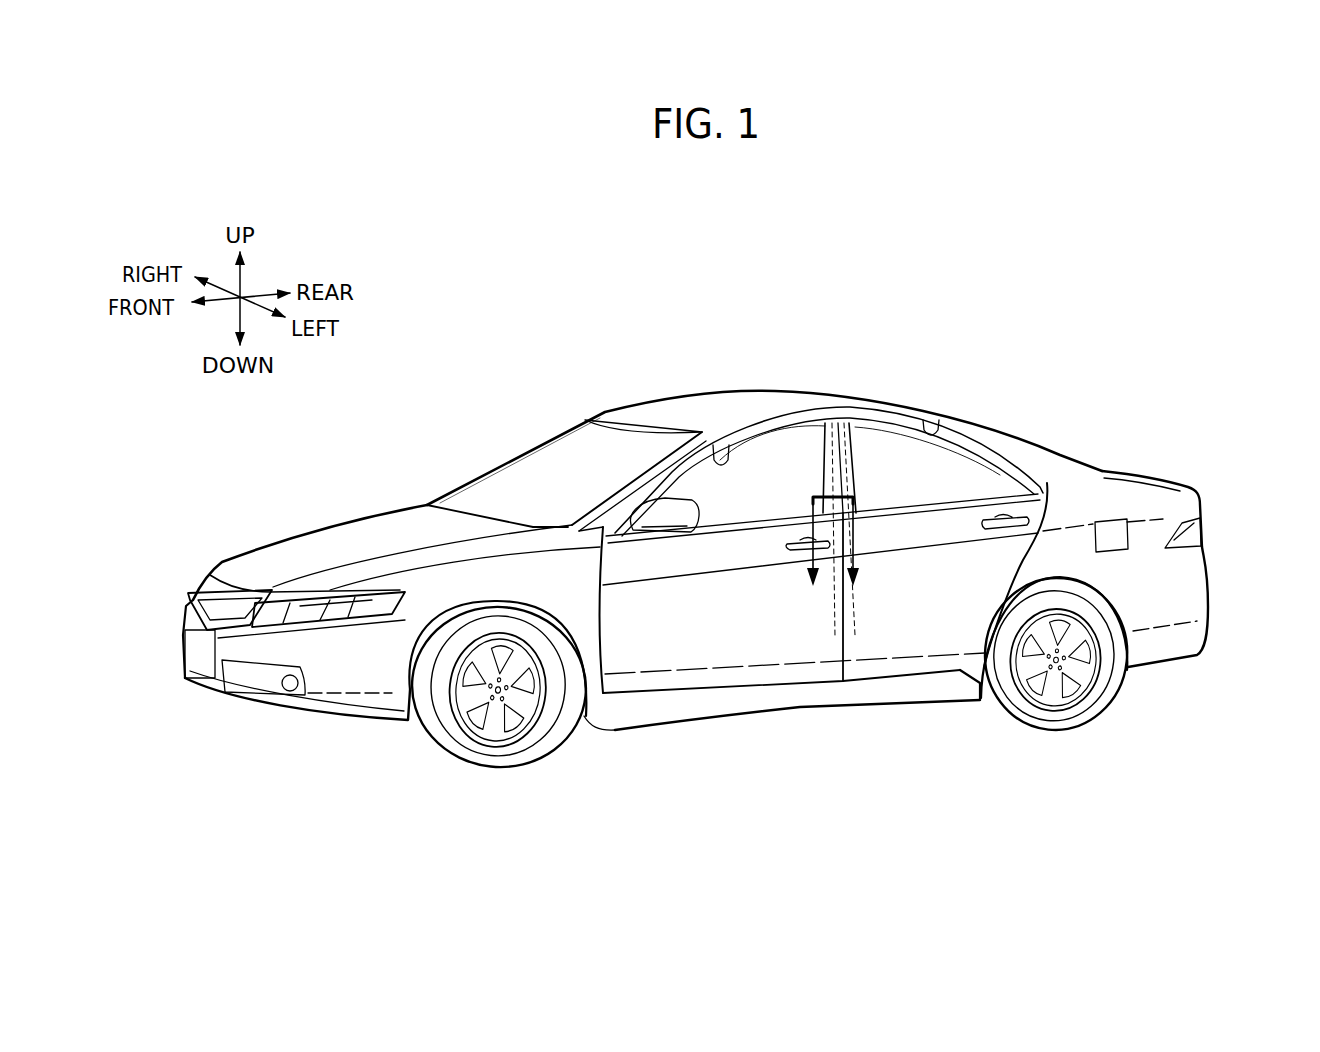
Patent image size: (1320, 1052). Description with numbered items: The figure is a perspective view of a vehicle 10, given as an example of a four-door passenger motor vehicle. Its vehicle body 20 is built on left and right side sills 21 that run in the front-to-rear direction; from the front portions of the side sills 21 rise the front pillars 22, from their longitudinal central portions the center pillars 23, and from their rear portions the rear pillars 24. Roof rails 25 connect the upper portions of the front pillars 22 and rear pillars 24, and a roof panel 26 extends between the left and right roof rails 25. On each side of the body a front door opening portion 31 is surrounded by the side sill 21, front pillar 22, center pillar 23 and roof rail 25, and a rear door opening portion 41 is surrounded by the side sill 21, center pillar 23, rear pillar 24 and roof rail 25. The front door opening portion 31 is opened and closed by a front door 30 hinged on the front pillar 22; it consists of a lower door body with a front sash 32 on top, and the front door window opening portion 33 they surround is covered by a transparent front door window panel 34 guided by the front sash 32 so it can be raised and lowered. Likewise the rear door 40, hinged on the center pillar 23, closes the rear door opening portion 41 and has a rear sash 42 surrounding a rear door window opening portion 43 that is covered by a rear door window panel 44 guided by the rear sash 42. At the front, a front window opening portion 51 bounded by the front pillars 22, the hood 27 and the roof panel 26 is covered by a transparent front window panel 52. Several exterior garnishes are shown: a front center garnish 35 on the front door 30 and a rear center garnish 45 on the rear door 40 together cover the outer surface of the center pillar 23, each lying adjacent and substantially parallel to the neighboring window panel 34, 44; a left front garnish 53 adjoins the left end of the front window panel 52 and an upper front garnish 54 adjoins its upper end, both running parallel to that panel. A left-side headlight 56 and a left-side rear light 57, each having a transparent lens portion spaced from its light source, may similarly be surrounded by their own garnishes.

The vehicle 10 is at (798, 315).
The vehicle body 20 is at (729, 390).
The side sill 21 is at (797, 693).
The front pillar 22 is at (672, 440).
The center pillar 23 is at (858, 600).
The rear pillar 24 is at (1037, 453).
The roof rail 25 is at (900, 417).
The roof panel 26 is at (840, 400).
The hood 27 is at (350, 543).
The front door 30 is at (737, 653).
The front door opening portion 31 is at (605, 638).
The front sash 32 is at (797, 423).
The front door window opening portion 33 is at (717, 433).
The front door window panel 34 is at (767, 477).
The front center garnish 35 is at (813, 497).
The rear door 40 is at (890, 647).
The rear door opening portion 41 is at (975, 623).
The rear sash 42 is at (977, 447).
The rear door window opening portion 43 is at (938, 425).
The rear door window panel 44 is at (983, 480).
The rear center garnish 45 is at (853, 497).
The front window opening portion 51 is at (463, 510).
The front window panel 52 is at (497, 487).
The left front garnish 53 is at (607, 477).
The upper front garnish 54 is at (630, 417).
The left-side headlight 56 is at (332, 600).
The left-side rear light 57 is at (1200, 526).